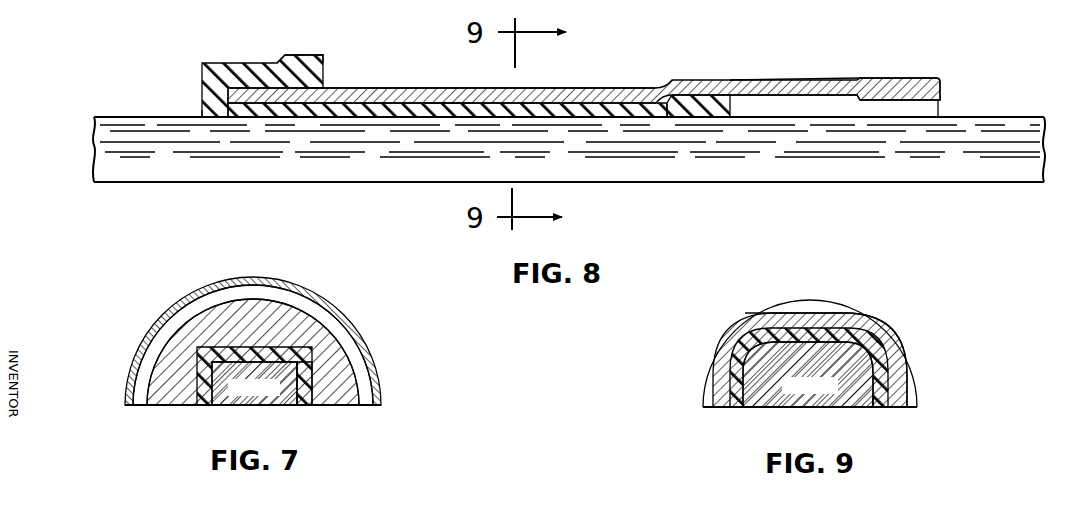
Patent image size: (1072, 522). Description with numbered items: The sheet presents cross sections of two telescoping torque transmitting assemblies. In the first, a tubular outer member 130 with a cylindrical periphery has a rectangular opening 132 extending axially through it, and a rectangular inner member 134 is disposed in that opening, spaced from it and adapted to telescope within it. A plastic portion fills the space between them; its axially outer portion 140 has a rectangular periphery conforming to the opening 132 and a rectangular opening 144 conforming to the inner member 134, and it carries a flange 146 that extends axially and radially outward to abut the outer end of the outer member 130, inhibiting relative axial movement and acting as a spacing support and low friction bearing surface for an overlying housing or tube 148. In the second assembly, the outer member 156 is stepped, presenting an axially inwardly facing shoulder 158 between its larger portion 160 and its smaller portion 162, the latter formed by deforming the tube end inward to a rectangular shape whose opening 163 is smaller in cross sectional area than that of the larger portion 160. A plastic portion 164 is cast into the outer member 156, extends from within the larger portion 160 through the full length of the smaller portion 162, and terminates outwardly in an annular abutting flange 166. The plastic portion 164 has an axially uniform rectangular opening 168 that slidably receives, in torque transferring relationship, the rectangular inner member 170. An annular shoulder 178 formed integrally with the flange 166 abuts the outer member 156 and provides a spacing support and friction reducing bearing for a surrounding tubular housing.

In FIG. 7, the outer member 130 is at (160, 382).
In FIG. 7, the rectangular opening 132 is at (300, 398).
In FIG. 7, the inner member 134 is at (254, 383).
In FIG. 7, the outer portion 140 is at (207, 400).
In FIG. 7, the rectangular opening 144 is at (270, 406).
In FIG. 7, the flange 146 is at (300, 305).
In FIG. 7, the housing or tube 148 is at (190, 297).
In FIG. 8, the outer member 156 is at (472, 81).
In FIG. 8, the shoulder 158 is at (660, 83).
In FIG. 9, the shoulder 158 is at (815, 310).
In FIG. 8, the larger portion 160 is at (787, 80).
In FIG. 9, the larger portion 160 is at (794, 301).
In FIG. 8, the smaller portion 162 is at (534, 89).
In FIG. 9, the smaller portion 162 is at (775, 322).
In FIG. 8, the opening 163 is at (443, 102).
In FIG. 9, the opening 163 is at (876, 407).
In FIG. 8, the plastic portion 164 is at (592, 102).
In FIG. 9, the plastic portion 164 is at (736, 407).
In FIG. 8, the annular abutting flange 166 is at (206, 99).
In FIG. 8, the rectangular opening 168 is at (205, 122).
In FIG. 9, the rectangular opening 168 is at (860, 408).
In FIG. 8, the inner member 170 is at (95, 152).
In FIG. 9, the inner member 170 is at (808, 374).
In FIG. 8, the annular shoulder 178 is at (303, 55).